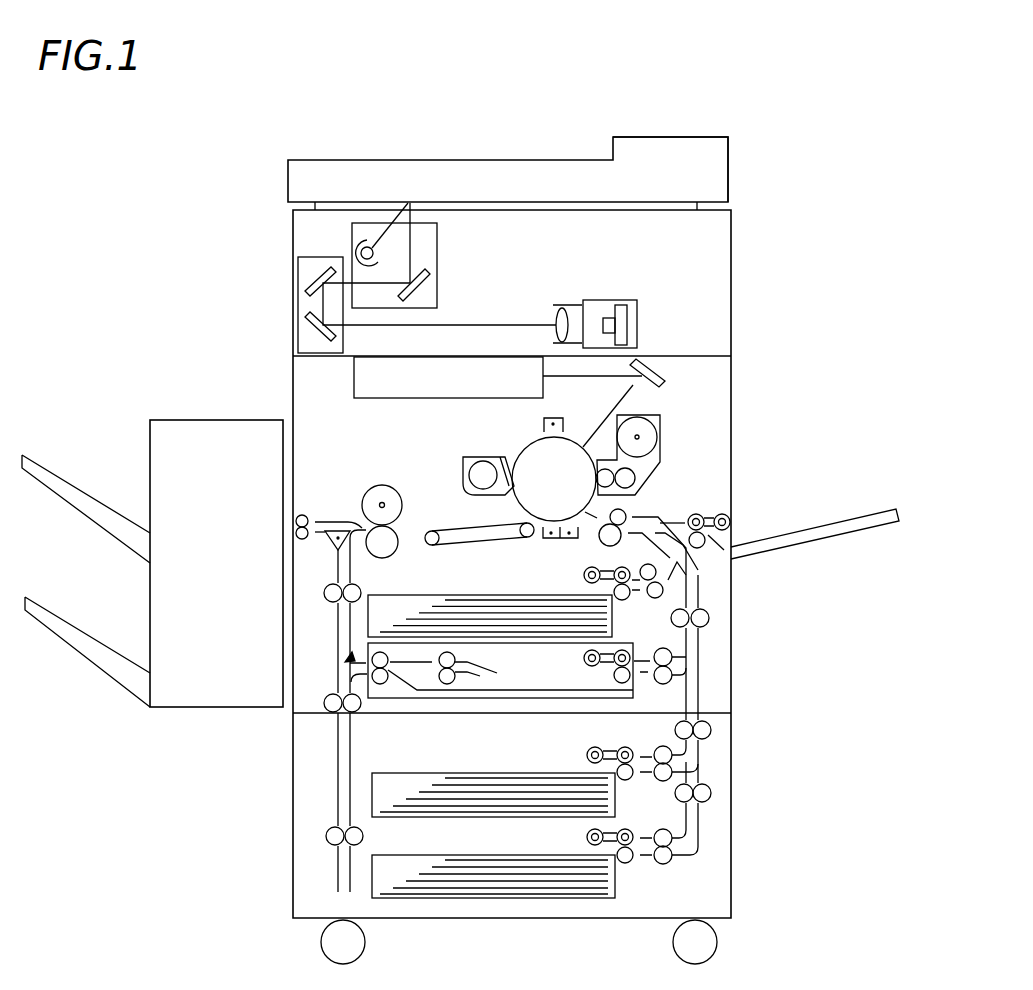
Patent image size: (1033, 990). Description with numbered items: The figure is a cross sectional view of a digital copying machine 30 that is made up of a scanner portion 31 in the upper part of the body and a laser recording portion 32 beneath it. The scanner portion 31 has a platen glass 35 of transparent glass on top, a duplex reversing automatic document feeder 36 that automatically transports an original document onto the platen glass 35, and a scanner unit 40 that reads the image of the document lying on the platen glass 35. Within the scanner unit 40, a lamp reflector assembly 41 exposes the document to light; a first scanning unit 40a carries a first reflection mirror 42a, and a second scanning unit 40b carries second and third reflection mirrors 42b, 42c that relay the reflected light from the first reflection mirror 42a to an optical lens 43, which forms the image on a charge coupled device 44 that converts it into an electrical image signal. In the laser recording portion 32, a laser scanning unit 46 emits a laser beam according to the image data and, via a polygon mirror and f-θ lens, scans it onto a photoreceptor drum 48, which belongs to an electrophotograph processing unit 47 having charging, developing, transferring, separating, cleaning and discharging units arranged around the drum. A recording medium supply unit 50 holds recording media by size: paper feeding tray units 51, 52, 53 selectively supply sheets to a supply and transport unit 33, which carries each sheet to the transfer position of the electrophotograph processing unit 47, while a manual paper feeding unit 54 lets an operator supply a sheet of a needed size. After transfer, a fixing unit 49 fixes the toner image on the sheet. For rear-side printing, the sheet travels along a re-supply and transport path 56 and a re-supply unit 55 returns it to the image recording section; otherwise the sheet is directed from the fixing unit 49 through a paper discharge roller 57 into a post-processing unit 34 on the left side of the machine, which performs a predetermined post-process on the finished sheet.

The digital copying machine 30 is at (815, 330).
The scanner portion 31 is at (732, 243).
The laser recording portion 32 is at (732, 411).
The supply and transport unit 33 is at (653, 527).
The post-processing unit 34 is at (168, 420).
The platen glass 35 is at (527, 200).
The duplex reversing automatic document feeder (RADF) 36 is at (582, 168).
The scanner unit 40 is at (321, 241).
The first scanning unit 40a is at (437, 296).
The second scanning unit 40b is at (345, 342).
The lamp reflector assembly 41 is at (385, 251).
The first reflection mirror 42a is at (427, 273).
The second reflection mirror 42b is at (312, 288).
The third reflection mirror 42c is at (310, 326).
The optical lens 43 is at (567, 305).
The charge coupled device (CCD) 44 is at (600, 312).
The laser scanning unit (LSU) 46 is at (374, 399).
The electrophotograph processing unit 47 is at (683, 403).
The photoreceptor drum 48 is at (527, 447).
The fixing unit 49 is at (393, 492).
The recording medium supply unit 50 is at (712, 692).
The paper feeding tray unit 51 is at (504, 594).
The paper feeding tray unit 52 is at (509, 773).
The paper feeding tray unit 53 is at (515, 855).
The manual paper feeding unit 54 is at (851, 519).
The re-supply unit 55 is at (455, 699).
The re-supply and transport path 56 is at (325, 594).
The paper discharge roller 57 is at (295, 523).